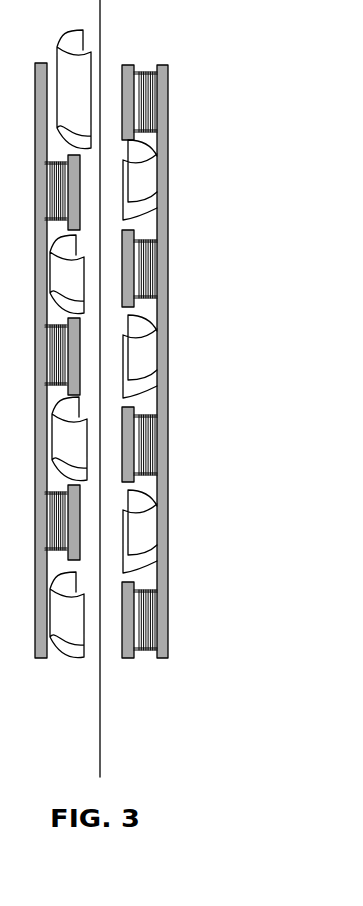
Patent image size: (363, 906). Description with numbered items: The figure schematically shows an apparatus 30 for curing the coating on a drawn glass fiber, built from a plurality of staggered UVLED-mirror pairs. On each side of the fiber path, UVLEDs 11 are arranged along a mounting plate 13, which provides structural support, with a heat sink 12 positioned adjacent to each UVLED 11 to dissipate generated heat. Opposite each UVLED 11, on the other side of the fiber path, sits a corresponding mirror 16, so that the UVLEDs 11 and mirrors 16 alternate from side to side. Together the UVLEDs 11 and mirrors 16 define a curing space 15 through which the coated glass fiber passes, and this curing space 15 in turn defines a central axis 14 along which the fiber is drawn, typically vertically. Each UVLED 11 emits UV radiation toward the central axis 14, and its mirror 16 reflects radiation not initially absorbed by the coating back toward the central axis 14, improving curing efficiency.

The UVLED 11 is at (127, 265).
The heat sink 12 is at (148, 105).
The mounting plate 13 is at (160, 357).
The central axis 14 is at (101, 682).
The curing space 15 is at (114, 440).
The mirror 16 is at (143, 527).
The apparatus 30 is at (187, 400).